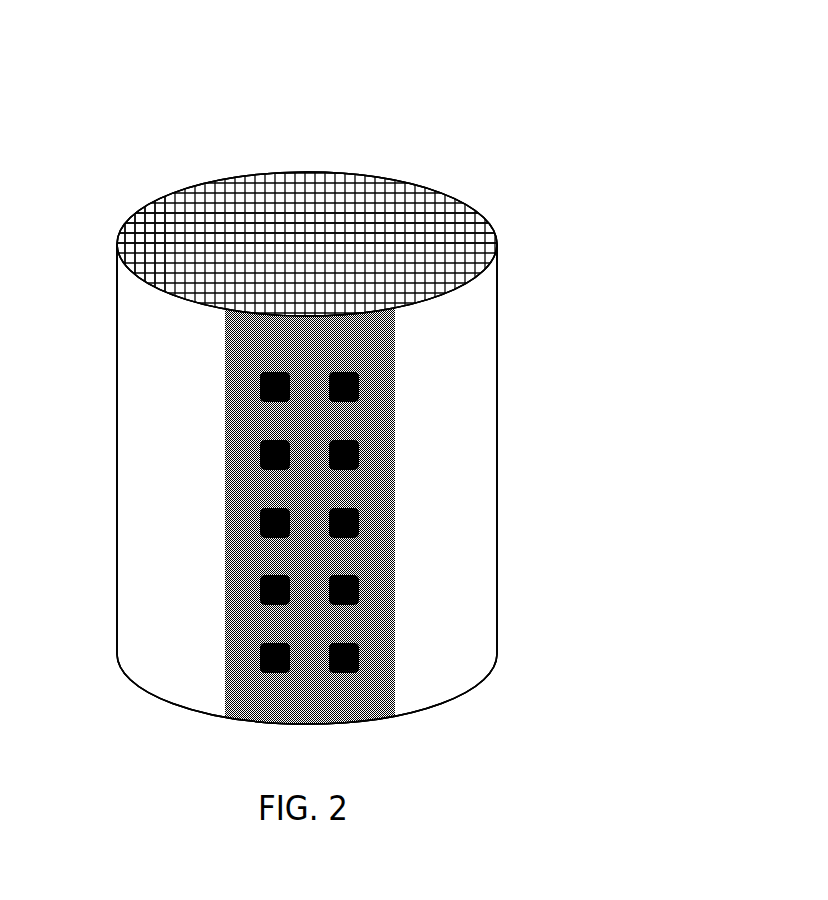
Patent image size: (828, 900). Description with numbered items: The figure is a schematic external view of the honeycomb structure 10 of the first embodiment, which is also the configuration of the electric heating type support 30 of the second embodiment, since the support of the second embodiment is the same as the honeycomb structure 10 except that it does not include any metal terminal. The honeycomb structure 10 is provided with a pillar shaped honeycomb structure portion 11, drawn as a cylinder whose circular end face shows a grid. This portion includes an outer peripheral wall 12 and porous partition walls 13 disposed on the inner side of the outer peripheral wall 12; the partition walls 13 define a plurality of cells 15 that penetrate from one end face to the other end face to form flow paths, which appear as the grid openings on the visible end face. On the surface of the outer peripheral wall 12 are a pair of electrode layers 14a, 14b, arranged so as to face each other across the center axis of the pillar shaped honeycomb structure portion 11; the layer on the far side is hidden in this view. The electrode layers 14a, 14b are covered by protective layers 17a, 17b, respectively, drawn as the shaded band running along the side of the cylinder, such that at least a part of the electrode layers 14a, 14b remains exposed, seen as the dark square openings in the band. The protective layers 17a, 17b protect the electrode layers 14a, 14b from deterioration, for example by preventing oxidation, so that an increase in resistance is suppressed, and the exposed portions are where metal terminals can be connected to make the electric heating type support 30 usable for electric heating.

The honeycomb structure 10 is at (308, 143).
The electric heating type support 30 is at (307, 448).
The pillar shaped honeycomb structure portion 11 is at (432, 188).
The outer peripheral wall 12 is at (493, 537).
The partition walls 13 is at (140, 238).
The cells 15 is at (202, 213).
The electrode layer 14a is at (352, 520).
The electrode layer 14b is at (309, 522).
The protective layer 17a is at (395, 427).
The protective layer 17b is at (310, 489).